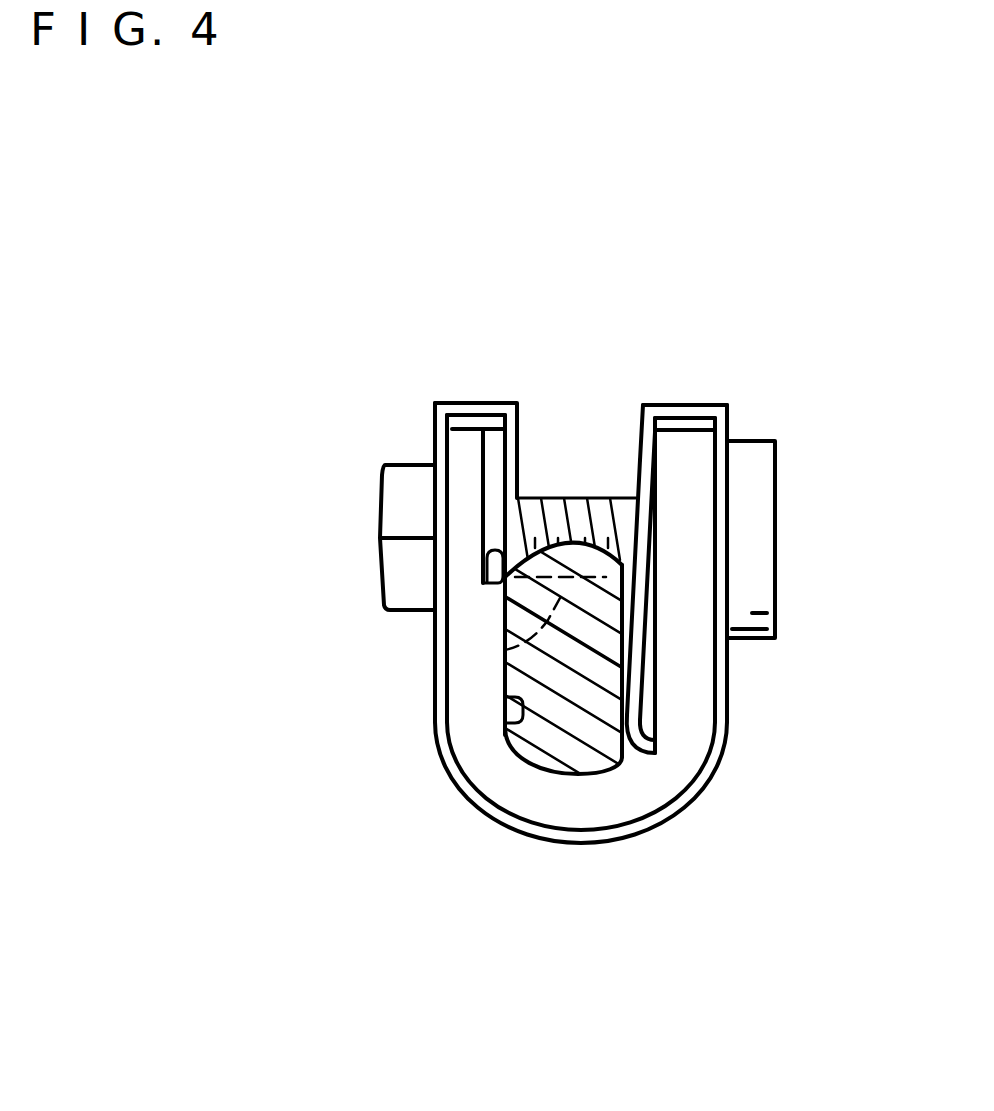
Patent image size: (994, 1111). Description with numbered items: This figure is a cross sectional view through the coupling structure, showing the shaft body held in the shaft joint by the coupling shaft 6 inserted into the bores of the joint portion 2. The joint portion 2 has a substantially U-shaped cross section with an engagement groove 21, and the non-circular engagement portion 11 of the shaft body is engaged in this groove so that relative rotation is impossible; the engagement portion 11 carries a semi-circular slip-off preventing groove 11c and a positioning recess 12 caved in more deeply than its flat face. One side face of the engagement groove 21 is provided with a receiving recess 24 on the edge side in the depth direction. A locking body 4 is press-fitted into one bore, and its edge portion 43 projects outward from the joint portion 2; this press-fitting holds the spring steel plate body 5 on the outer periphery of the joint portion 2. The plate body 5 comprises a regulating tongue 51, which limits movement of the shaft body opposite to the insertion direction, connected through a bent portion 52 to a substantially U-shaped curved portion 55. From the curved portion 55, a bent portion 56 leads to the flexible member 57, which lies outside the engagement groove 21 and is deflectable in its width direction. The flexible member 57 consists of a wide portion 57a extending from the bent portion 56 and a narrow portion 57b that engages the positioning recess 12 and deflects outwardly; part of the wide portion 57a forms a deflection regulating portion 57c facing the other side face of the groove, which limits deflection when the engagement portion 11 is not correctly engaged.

The joint portion 2 is at (576, 589).
The locking body 4 is at (813, 481).
The plate body 5 is at (576, 589).
The coupling shaft 6 is at (397, 497).
The engagement portion 11 is at (498, 728).
The slip-off preventing groove 11c is at (505, 651).
The positioning recess 12 is at (630, 750).
The engagement groove 21 is at (505, 737).
The receiving recess 24 is at (483, 576).
The edge portion 43 is at (743, 441).
The regulating tongue 51 is at (455, 523).
The bent portion 52 is at (472, 405).
The curved portion 55 is at (578, 845).
The bent portion 56 is at (744, 329).
The flexible member 57 is at (735, 530).
The wide portion 57a is at (645, 456).
The narrow portion 57b is at (637, 713).
The deflection regulating portion 57c is at (657, 443).